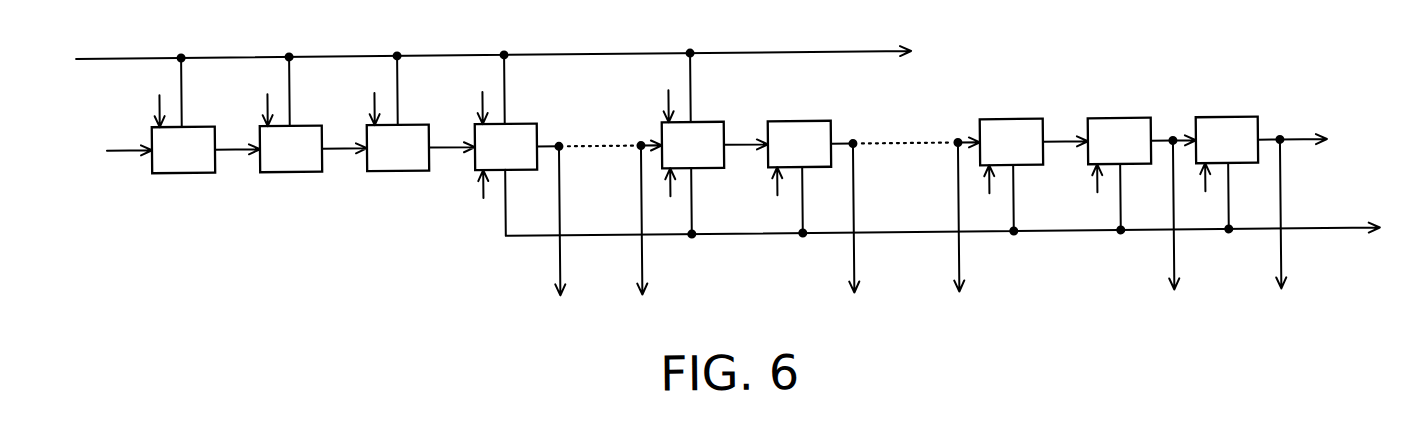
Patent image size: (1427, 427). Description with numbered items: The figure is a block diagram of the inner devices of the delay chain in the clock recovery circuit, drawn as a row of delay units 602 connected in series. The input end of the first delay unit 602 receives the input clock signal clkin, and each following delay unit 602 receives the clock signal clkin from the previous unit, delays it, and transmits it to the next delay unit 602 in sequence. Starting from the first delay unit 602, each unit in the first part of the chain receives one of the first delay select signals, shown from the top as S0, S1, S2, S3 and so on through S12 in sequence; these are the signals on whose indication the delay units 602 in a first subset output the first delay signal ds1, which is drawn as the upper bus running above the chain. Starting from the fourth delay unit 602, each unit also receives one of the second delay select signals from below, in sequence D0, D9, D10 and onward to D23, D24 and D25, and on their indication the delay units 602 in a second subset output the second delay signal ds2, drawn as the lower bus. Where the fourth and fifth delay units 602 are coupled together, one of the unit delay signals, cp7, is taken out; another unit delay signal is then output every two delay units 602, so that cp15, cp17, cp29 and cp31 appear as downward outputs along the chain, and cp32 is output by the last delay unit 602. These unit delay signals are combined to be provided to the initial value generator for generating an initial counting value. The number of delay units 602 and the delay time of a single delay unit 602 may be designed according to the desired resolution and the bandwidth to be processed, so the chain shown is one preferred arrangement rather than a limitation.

The delay unit 602 is at (182, 168).
The first delay signal ds1 is at (515, 80).
The second delay signal ds2 is at (959, 205).
The input clock signal clkin is at (107, 147).
The first delay select signal S0 is at (159, 96).
The first delay select signal S1 is at (268, 95).
The first delay select signal S2 is at (375, 94).
The first delay select signal S3 is at (482, 93).
The first delay select signal S12 is at (664, 91).
The second delay select signal D0 is at (485, 201).
The second delay select signal D9 is at (672, 199).
The second delay select signal D10 is at (775, 198).
The second delay select signal D23 is at (985, 196).
The second delay select signal D24 is at (1093, 195).
The second delay select signal D25 is at (1200, 194).
The unit delay signal cp7 is at (563, 237).
The unit delay signal cp15 is at (644, 236).
The unit delay signal cp17 is at (858, 234).
The unit delay signal cp29 is at (963, 233).
The unit delay signal cp31 is at (1180, 231).
The unit delay signal cp32 is at (1286, 230).